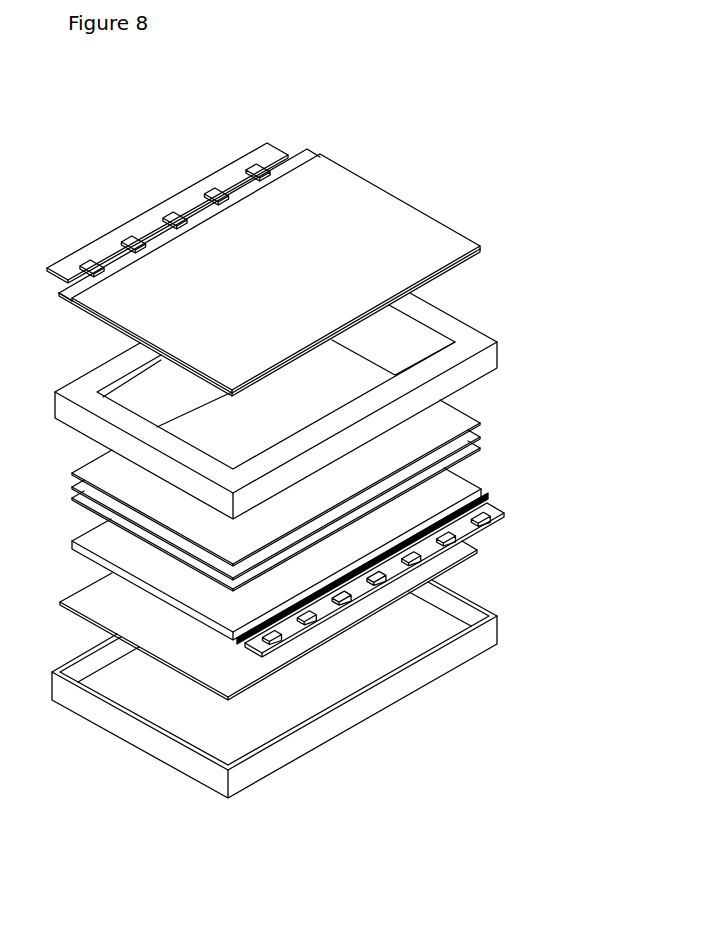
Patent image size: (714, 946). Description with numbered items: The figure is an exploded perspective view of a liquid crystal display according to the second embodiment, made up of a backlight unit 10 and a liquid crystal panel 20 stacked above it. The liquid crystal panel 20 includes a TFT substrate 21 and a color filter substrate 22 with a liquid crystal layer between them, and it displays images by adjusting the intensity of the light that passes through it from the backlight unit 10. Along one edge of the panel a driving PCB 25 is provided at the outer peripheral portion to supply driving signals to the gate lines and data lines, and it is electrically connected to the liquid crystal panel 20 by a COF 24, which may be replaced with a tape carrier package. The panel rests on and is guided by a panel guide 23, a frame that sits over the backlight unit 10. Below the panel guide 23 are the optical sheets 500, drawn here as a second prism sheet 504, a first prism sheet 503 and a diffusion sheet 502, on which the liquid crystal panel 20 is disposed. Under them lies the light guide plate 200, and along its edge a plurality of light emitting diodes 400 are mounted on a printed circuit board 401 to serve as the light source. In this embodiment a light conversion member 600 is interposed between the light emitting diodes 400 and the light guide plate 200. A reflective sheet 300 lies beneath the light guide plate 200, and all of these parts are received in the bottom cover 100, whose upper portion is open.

The backlight unit 10 is at (571, 425).
The liquid crystal panel 20 is at (362, 121).
The TFT substrate 21 is at (305, 150).
The color filter substrate 22 is at (343, 167).
The panel guide 23 is at (494, 356).
The COF (chip on film) 24 is at (257, 165).
The driving PCB 25 is at (68, 258).
The bottom cover 100 is at (480, 641).
The light guide plate 200 is at (465, 480).
The reflective sheet 300 is at (471, 553).
The light emitting diodes 400 is at (498, 522).
The printed circuit board 401 is at (493, 510).
The optical sheets 500 is at (531, 408).
The diffusion sheet 502 is at (482, 451).
The first prism sheet 503 is at (480, 440).
The second prism sheet 504 is at (477, 427).
The light conversion member 600 is at (238, 636).